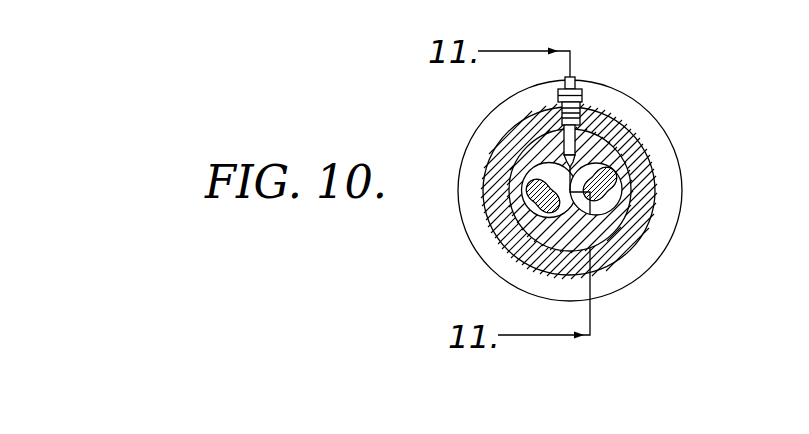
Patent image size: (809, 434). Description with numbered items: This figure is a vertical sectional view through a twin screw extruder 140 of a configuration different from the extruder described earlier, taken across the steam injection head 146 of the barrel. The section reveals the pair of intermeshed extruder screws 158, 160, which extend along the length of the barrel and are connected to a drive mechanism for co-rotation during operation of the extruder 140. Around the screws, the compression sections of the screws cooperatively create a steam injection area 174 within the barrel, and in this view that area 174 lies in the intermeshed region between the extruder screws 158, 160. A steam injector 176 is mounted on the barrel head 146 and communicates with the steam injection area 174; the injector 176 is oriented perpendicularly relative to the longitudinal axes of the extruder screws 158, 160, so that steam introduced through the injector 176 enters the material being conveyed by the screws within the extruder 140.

The extruder 140 is at (697, 112).
The second steam injection head 146 is at (493, 228).
The extruder screw 158 is at (527, 158).
The extruder screw 160 is at (625, 197).
The steam injection area 174 is at (604, 210).
The steam injector 176 is at (582, 93).